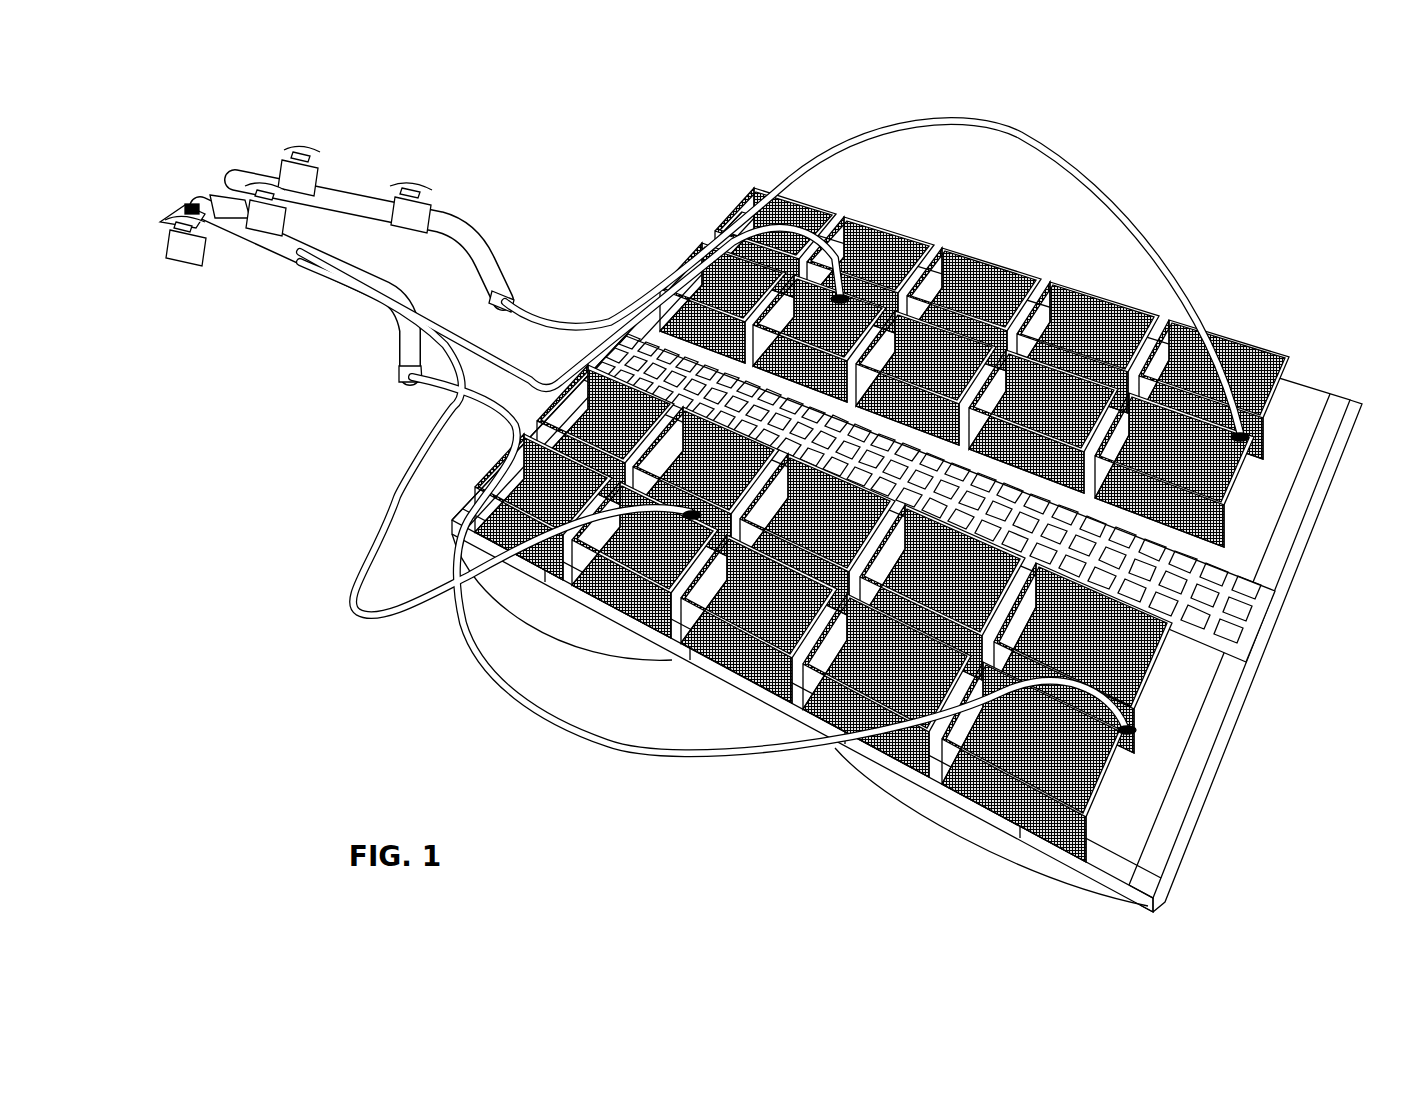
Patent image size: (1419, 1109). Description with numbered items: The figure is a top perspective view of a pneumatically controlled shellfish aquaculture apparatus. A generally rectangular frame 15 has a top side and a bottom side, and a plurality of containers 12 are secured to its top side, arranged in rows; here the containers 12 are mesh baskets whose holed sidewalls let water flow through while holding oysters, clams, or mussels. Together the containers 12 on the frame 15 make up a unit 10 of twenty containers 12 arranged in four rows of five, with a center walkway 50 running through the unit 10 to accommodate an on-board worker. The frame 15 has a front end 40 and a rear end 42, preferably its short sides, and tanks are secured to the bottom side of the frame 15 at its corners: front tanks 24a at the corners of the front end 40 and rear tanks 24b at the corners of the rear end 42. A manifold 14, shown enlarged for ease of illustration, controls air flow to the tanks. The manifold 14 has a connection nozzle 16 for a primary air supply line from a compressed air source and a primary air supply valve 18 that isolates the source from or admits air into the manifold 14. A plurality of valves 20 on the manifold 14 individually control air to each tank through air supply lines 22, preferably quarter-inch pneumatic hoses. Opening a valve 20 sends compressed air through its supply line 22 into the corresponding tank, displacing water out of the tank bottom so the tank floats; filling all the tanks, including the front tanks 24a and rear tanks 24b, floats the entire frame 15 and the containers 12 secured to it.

The unit 10 is at (1272, 214).
The container 12 is at (912, 228).
The manifold 14 is at (353, 192).
The frame 15 is at (1148, 906).
The connection nozzle 16 is at (197, 210).
The primary air supply valve 18 is at (243, 207).
The valve 20 is at (296, 172).
The air supply line 22 is at (540, 323).
The front tank 24a is at (992, 838).
The rear tank 24b is at (575, 618).
The front end 40 is at (1238, 742).
The rear end 42 is at (624, 333).
The center walkway 50 is at (1277, 570).